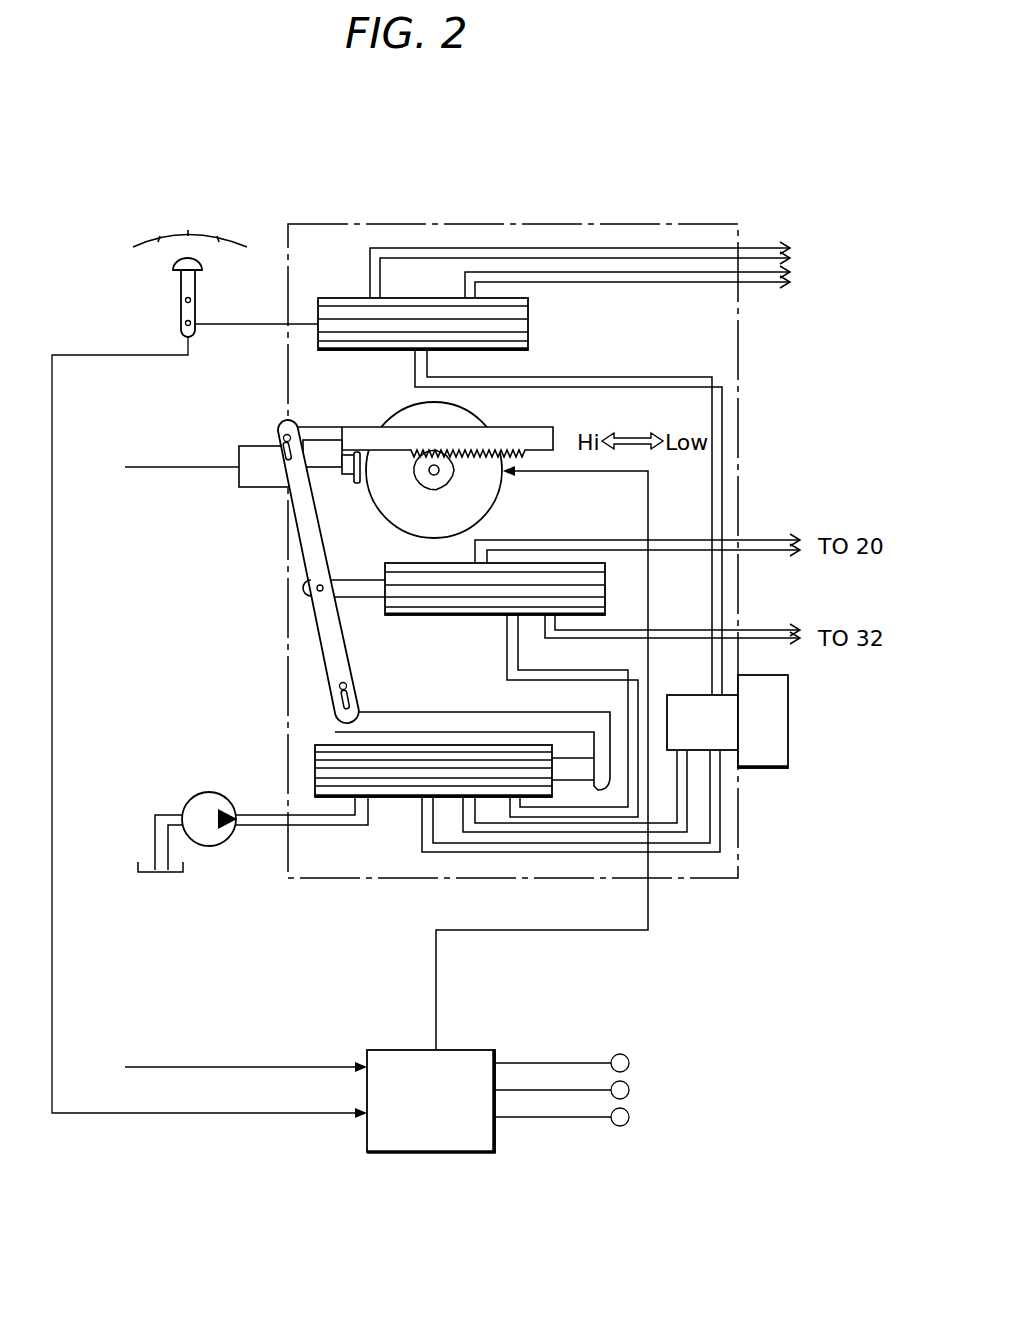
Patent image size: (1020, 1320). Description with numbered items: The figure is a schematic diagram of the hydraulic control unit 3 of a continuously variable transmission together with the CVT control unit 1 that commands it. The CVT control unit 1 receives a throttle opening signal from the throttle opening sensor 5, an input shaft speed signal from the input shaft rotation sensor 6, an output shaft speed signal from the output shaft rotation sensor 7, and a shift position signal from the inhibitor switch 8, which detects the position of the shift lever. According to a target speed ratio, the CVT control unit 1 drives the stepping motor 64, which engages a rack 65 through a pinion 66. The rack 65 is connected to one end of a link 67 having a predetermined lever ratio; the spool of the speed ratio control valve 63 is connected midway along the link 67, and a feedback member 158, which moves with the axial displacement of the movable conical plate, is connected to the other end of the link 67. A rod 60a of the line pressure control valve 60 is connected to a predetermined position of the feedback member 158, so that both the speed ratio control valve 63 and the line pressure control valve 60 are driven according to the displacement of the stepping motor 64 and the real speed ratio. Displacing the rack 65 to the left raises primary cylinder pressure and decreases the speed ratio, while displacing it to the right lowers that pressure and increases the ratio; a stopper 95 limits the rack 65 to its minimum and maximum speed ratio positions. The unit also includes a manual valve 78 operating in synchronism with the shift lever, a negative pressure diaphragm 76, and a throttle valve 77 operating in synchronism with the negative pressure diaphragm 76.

The CVT control unit 1 is at (382, 1048).
The hydraulic control unit 3 is at (566, 220).
The throttle opening sensor 5 is at (629, 1061).
The input shaft rotation sensor 6 is at (629, 1090).
The output shaft rotation sensor 7 is at (629, 1118).
The inhibitor switch 8 is at (181, 305).
The line pressure control valve 60 is at (415, 775).
The rod 60a is at (570, 768).
The speed ratio control valve 63 is at (445, 600).
The stepping motor 64 is at (498, 500).
The rack 65 is at (490, 455).
The pinion 66 is at (430, 478).
The link 67 is at (302, 508).
The negative pressure diaphragm 76 is at (780, 770).
The throttle valve 77 is at (682, 702).
The manual valve 78 is at (528, 324).
The stopper 95 is at (245, 446).
The feedback member 158 is at (430, 714).